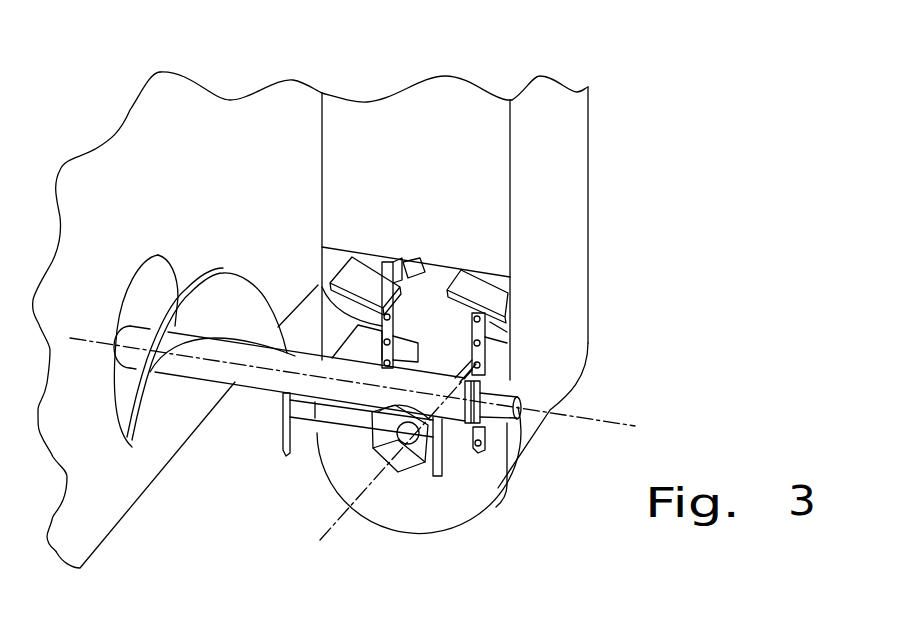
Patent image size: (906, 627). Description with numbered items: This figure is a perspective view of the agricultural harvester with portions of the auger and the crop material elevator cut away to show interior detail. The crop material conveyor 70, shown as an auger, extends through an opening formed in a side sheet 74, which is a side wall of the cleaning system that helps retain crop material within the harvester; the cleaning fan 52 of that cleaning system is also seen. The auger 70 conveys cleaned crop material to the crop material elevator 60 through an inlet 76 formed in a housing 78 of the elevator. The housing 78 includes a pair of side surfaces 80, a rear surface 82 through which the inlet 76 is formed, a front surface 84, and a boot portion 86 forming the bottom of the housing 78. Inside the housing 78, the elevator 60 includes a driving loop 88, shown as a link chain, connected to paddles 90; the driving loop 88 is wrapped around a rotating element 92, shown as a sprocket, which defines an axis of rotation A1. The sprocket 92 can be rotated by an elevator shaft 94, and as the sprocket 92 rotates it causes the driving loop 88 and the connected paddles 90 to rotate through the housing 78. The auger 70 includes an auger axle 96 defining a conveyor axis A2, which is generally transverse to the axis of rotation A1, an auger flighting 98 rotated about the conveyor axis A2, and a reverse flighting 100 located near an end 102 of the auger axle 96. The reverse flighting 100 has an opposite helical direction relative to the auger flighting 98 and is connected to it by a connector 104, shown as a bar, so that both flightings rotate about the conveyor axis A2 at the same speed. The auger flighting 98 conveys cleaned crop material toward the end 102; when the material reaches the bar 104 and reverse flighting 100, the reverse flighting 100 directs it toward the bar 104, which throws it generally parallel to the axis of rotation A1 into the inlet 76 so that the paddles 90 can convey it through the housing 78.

The cleaning fan 52 is at (142, 267).
The crop material elevator 60 is at (538, 477).
The crop material conveyor 70 is at (259, 434).
The side sheet 74 is at (88, 420).
The inlet 76 is at (507, 362).
The housing 78 is at (567, 297).
The side surfaces 80 is at (318, 140).
The rear surface 82 is at (430, 172).
The front surface 84 is at (592, 148).
The boot portion 86 is at (420, 528).
The driving loop 88 is at (320, 283).
The paddles 90 is at (353, 265).
The rotating element 92 is at (386, 430).
The elevator shaft 94 is at (412, 472).
The auger axle 96 is at (268, 380).
The auger flighting 98 is at (233, 272).
The reverse flighting 100 is at (450, 457).
The end 102 is at (520, 412).
The connector 104 is at (318, 450).
The axis of rotation A1 is at (396, 459).
The conveyor axis A2 is at (352, 382).